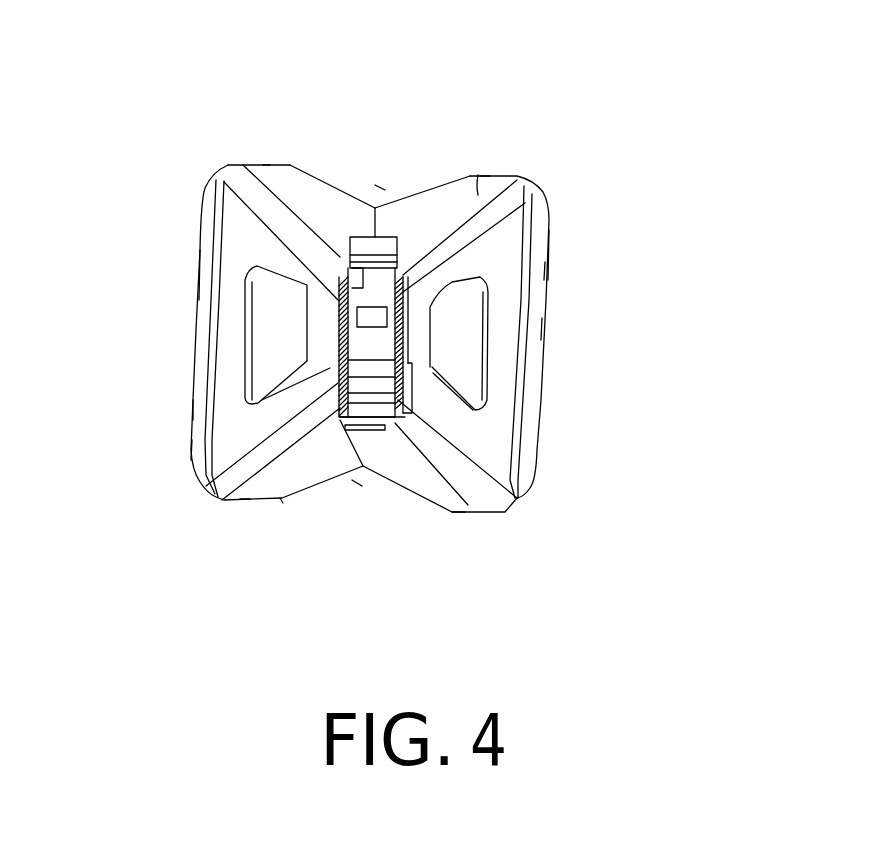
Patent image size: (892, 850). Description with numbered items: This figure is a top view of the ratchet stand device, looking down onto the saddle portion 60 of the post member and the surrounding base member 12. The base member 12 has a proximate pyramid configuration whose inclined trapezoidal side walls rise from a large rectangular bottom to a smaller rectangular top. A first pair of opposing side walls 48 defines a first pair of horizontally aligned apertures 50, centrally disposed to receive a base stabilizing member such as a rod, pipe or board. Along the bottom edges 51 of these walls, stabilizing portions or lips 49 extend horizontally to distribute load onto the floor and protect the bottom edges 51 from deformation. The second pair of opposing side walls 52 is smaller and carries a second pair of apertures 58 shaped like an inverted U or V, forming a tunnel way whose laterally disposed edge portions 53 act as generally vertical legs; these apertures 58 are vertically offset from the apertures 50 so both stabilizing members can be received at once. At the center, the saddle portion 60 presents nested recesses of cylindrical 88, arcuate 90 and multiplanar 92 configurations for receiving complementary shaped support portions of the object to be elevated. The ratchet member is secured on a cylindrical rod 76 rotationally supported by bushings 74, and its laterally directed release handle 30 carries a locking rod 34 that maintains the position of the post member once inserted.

The base member 12 is at (505, 510).
The release handle 30 is at (390, 422).
The locking rod 34 is at (340, 425).
The first pair of opposing side walls 48 is at (210, 262).
The stabilizing portions or lips 49 is at (205, 412).
The first pair of horizontally aligned apertures 50 is at (275, 335).
The bottom edges 51 is at (200, 458).
The second pair of opposing side walls 52 is at (478, 175).
The edge portions 53 is at (263, 165).
The second pair of horizontally aligned apertures 58 is at (380, 188).
The saddle portion 60 is at (352, 235).
The bushings 74 is at (413, 385).
The cylindrical rod 76 is at (320, 373).
The cylindrical recess 88 is at (405, 312).
The arcuate recess 90 is at (332, 222).
The multiplanar recess 92 is at (399, 262).